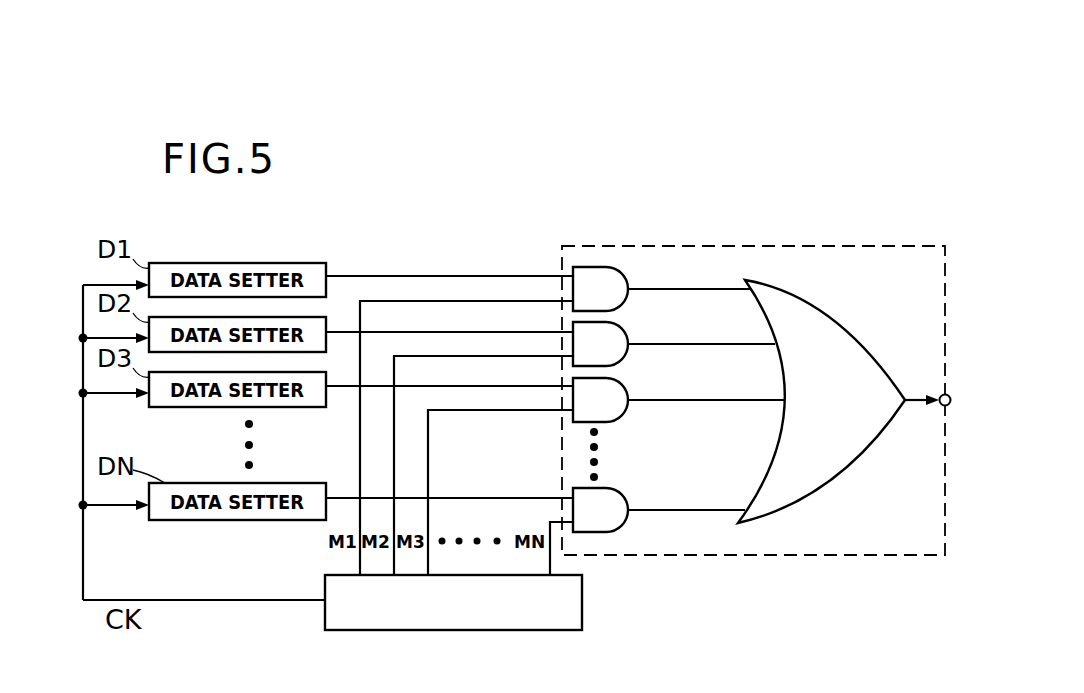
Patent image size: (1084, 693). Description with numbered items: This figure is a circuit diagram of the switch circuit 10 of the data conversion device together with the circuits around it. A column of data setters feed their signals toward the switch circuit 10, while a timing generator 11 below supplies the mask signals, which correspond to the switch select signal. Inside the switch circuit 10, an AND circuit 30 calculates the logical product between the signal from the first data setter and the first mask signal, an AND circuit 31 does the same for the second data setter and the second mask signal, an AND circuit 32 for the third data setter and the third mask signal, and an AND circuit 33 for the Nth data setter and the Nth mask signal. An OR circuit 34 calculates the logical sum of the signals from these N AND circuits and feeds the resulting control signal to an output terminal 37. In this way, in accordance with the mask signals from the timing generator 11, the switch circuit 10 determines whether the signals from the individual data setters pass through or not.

The switch circuit 10 is at (838, 246).
The timing generator 11 is at (582, 603).
The AND circuit 30 is at (628, 280).
The AND circuit 31 is at (628, 334).
The AND circuit 32 is at (628, 390).
The AND circuit 33 is at (626, 498).
The OR circuit 34 is at (850, 326).
The output terminal 37 is at (941, 407).